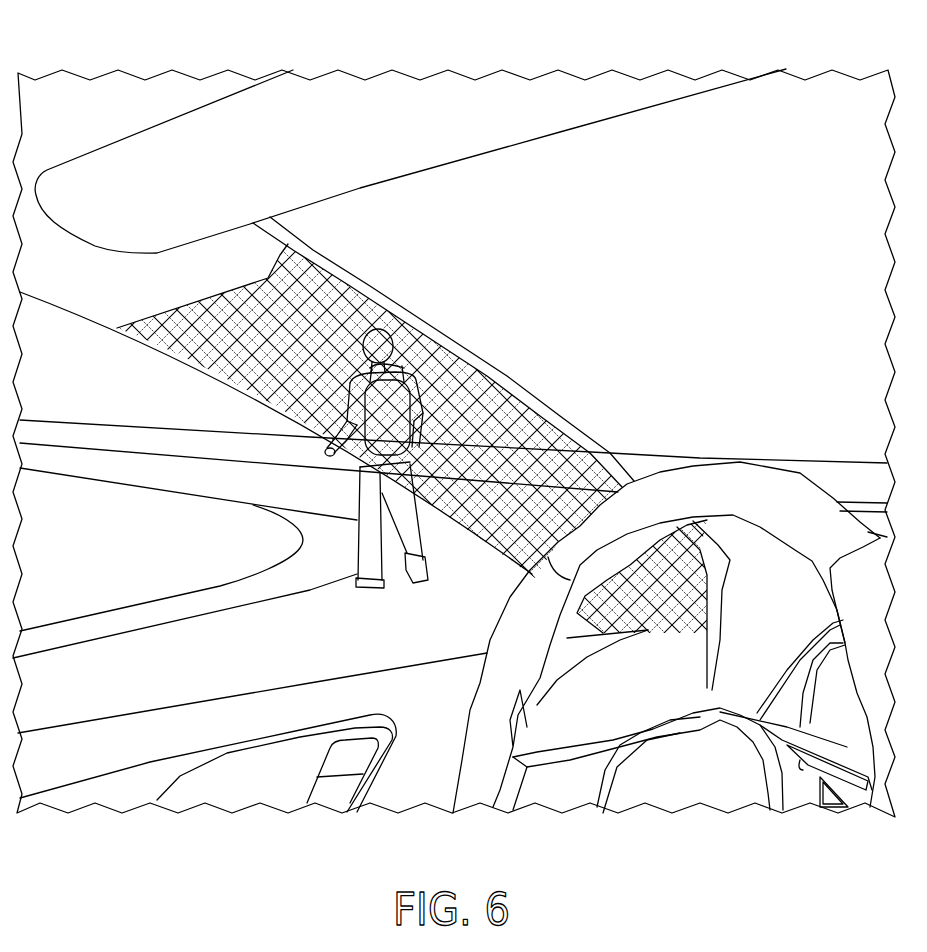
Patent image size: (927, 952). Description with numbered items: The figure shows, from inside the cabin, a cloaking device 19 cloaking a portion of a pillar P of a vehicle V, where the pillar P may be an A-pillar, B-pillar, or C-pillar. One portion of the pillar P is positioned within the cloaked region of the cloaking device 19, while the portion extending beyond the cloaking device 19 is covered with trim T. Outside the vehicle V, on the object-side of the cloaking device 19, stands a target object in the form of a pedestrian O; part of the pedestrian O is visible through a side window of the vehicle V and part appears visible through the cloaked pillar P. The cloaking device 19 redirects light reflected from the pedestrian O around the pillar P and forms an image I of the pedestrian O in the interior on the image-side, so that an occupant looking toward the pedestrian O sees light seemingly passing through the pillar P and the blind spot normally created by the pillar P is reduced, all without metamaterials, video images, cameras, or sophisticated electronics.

The vehicle V is at (121, 95).
The pillar P is at (108, 302).
The trim T is at (266, 253).
The cloaking device 19 is at (481, 355).
The image I is at (527, 396).
The target object (pedestrian) O is at (371, 568).